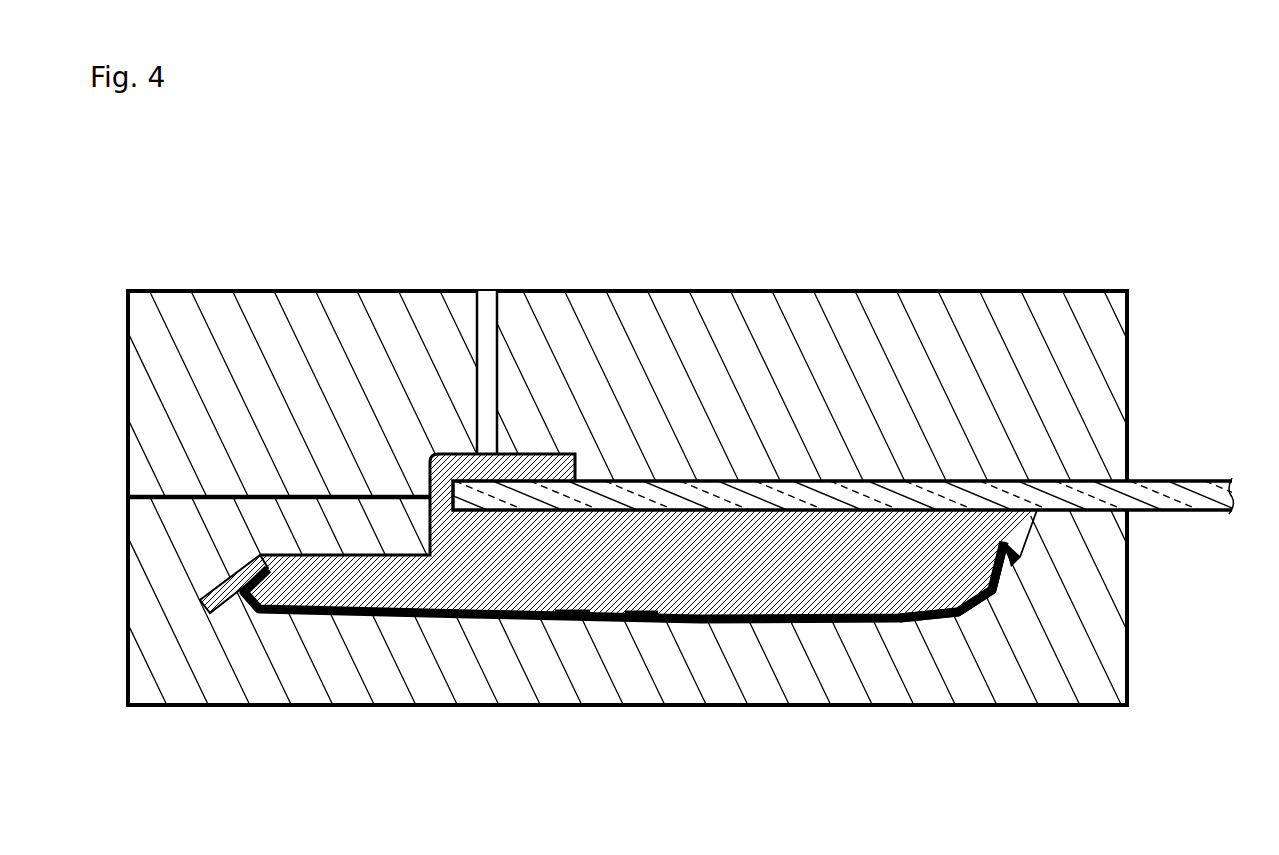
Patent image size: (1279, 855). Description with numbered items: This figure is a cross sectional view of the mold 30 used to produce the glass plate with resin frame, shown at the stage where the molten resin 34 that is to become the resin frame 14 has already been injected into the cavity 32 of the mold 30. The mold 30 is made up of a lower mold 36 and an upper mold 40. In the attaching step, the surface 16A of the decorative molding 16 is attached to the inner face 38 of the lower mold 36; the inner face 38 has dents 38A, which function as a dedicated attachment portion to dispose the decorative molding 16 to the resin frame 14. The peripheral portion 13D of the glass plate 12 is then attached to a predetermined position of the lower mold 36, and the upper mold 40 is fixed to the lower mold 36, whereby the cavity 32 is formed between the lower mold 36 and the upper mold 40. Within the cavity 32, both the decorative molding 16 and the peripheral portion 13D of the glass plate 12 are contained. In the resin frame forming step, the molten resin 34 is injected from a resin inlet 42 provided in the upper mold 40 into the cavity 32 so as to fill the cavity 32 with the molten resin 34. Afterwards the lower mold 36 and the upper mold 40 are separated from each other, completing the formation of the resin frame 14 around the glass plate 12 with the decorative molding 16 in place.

The mold 30 is at (627, 462).
The upper mold 40 is at (642, 394).
The lower mold 36 is at (1069, 656).
The resin inlet 42 is at (485, 301).
The molten resin 34 is at (621, 432).
The resin frame 14 is at (621, 432).
The cavity 32 is at (694, 559).
The glass plate 12 is at (846, 379).
The peripheral portion 13D is at (714, 490).
The decorative molding 16 is at (624, 654).
The surface 16A is at (860, 618).
The inner face 38 is at (587, 624).
The dents 38A is at (628, 623).